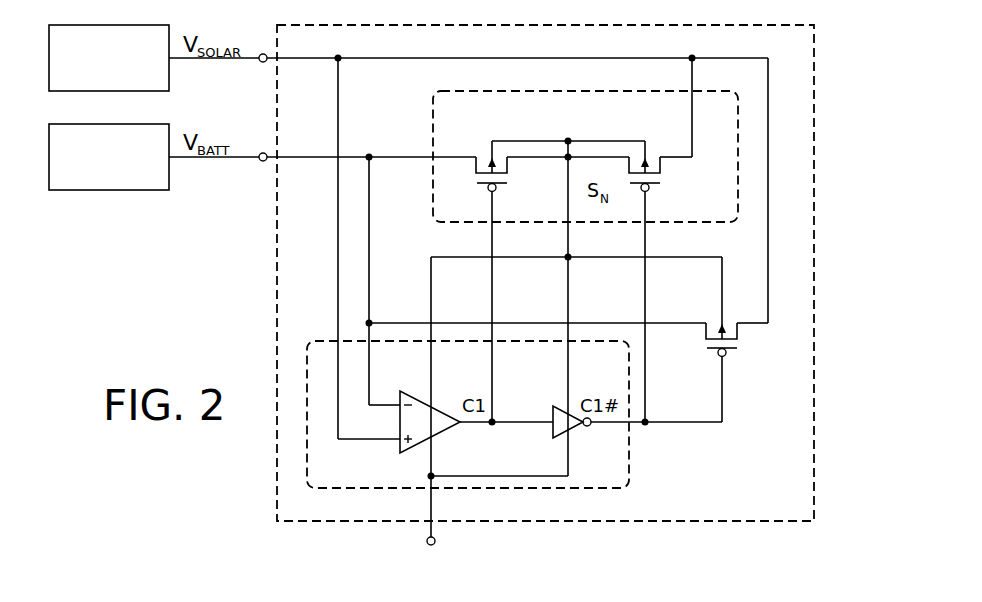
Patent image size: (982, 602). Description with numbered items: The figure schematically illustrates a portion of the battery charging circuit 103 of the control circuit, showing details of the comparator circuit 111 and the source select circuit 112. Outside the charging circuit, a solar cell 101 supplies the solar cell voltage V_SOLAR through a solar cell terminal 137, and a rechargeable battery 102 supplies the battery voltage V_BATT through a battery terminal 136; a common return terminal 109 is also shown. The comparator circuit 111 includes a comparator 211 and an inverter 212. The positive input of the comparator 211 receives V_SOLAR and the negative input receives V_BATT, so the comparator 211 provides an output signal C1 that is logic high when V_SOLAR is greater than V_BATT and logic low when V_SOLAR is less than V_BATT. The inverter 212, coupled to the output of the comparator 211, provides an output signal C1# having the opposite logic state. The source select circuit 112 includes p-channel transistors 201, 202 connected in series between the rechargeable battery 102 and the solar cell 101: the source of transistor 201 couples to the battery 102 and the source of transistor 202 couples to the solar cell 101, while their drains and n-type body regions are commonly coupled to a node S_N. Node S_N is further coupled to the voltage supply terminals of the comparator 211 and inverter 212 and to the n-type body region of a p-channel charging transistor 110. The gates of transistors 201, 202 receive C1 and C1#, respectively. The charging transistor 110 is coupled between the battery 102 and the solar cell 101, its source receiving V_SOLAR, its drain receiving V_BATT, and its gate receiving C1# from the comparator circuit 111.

The solar cell 101 is at (153, 96).
The rechargeable battery 102 is at (109, 170).
The battery charging circuit 103 is at (815, 108).
The common return terminal 109 is at (435, 545).
The p-channel charging transistor 110 is at (739, 336).
The comparator circuit 111 is at (355, 490).
The source select circuit 112 is at (585, 91).
The battery terminal 136 is at (260, 161).
The solar cell terminal 137 is at (260, 62).
The p-channel transistor 201 is at (509, 170).
The p-channel transistor 202 is at (662, 167).
The comparator 211 is at (447, 432).
The inverter 212 is at (573, 430).